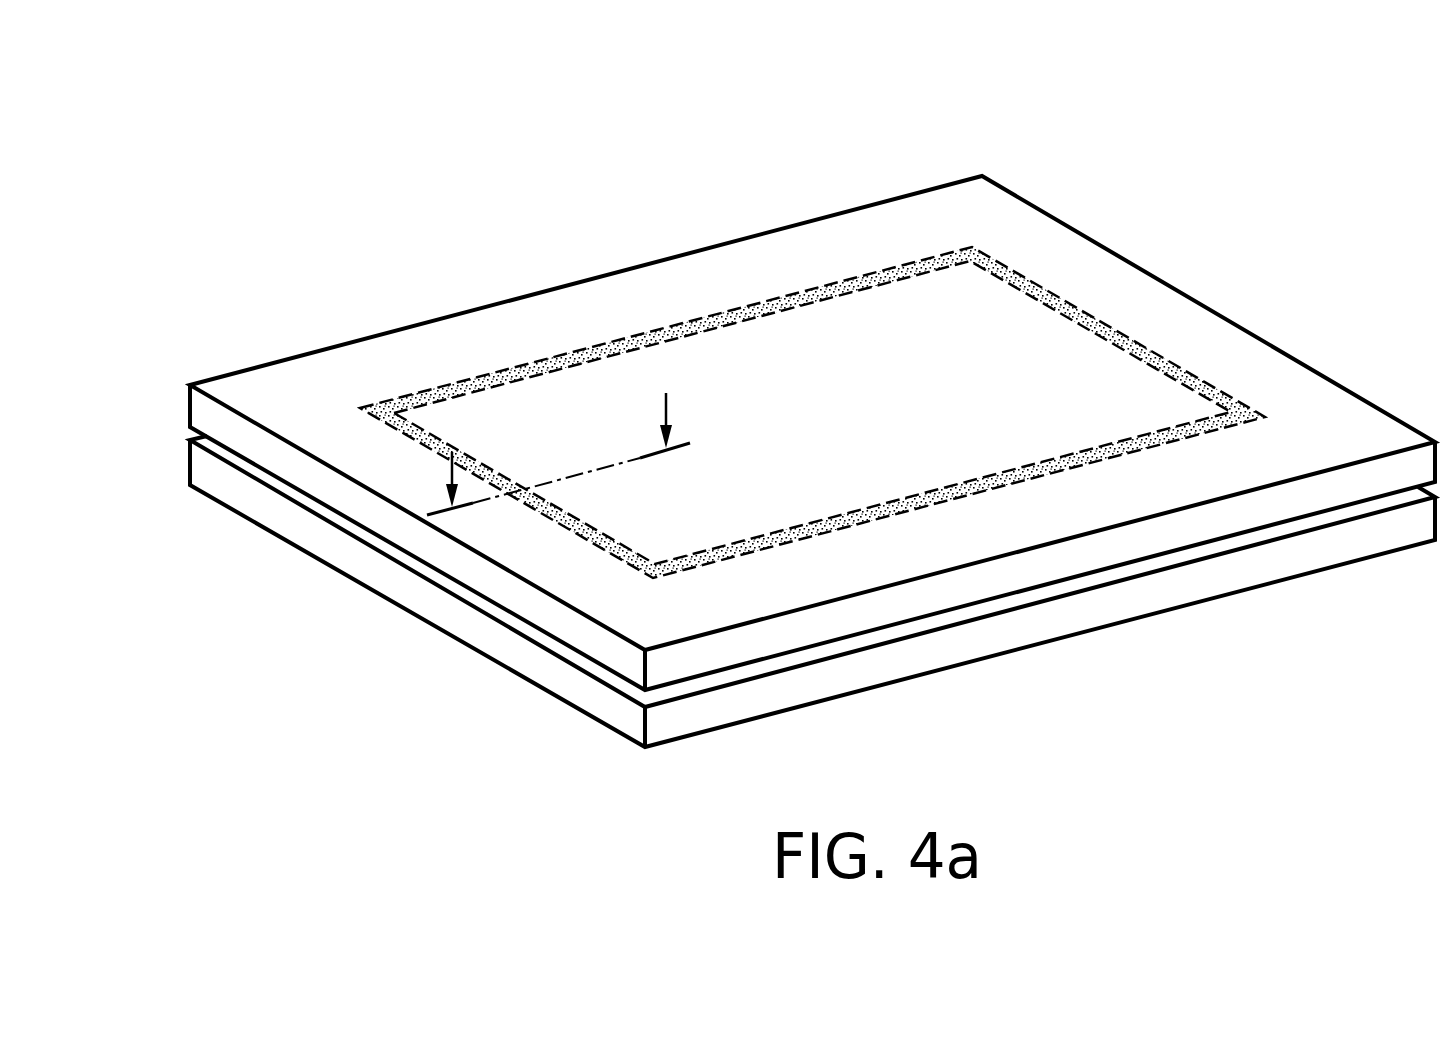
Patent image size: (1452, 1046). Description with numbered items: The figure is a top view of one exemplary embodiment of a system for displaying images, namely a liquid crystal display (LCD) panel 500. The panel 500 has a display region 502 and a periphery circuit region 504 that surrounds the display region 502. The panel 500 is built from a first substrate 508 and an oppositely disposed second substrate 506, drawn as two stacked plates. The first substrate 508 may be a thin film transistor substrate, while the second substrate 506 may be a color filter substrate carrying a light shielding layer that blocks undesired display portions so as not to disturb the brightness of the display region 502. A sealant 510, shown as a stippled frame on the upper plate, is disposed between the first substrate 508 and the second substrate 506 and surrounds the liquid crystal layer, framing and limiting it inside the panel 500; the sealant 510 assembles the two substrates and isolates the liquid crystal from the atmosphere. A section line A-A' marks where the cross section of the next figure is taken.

The liquid crystal display (LCD) panel 500 is at (218, 135).
The display region 502 is at (877, 337).
The periphery circuit region 504 is at (957, 208).
The second substrate 506 is at (190, 461).
The first substrate 508 is at (190, 402).
The sealant 510 is at (537, 365).